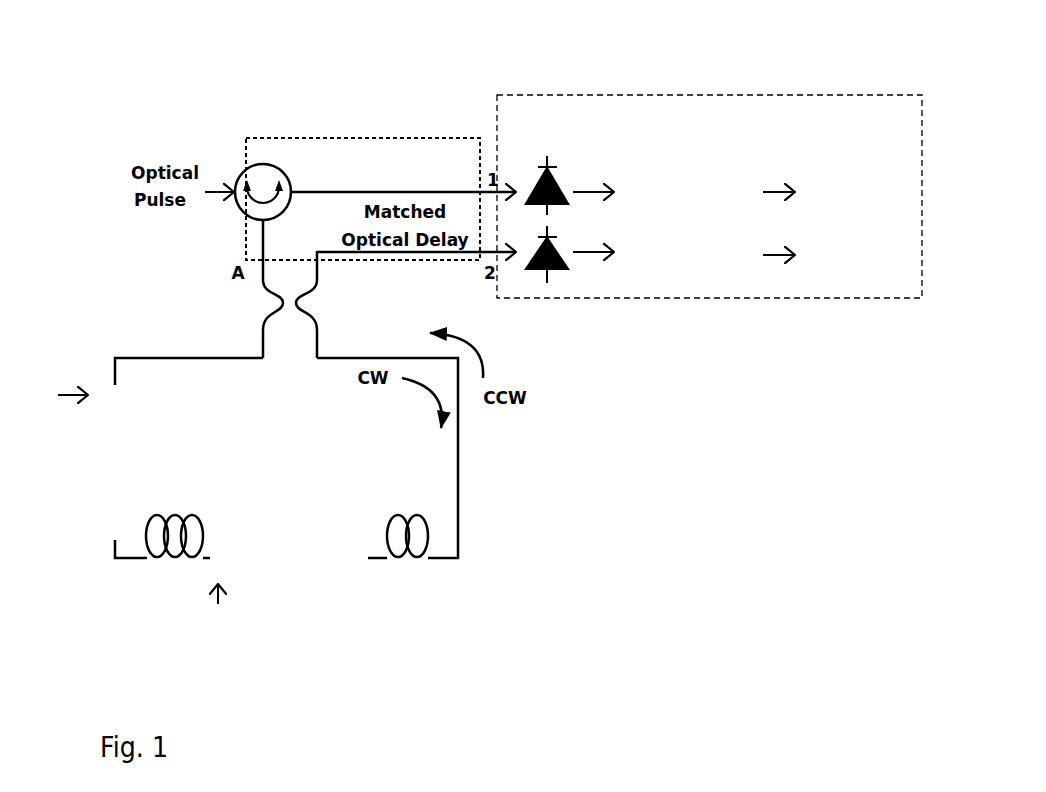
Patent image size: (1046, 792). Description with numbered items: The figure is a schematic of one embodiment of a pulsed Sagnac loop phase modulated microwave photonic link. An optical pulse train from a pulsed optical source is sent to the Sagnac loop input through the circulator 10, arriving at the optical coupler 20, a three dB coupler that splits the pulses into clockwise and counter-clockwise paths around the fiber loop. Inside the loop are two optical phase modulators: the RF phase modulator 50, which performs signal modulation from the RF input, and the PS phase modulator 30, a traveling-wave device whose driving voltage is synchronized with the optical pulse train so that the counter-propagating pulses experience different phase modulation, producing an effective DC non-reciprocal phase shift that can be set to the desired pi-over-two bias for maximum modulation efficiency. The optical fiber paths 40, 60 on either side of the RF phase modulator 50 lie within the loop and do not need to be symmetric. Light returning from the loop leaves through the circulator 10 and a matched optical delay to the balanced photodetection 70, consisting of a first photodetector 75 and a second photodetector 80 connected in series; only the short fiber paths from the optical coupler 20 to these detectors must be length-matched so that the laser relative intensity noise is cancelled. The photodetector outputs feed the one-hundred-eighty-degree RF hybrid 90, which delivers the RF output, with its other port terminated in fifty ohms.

The circulator 10 is at (237, 160).
The optical coupler 20 is at (272, 300).
The PS phase modulator 30 is at (85, 447).
The optical fiber path 40 is at (148, 568).
The RF phase modulator 50 is at (327, 590).
The optical fiber path 60 is at (423, 565).
The balanced photodetection 70 is at (648, 305).
The first photodetector 75 is at (560, 160).
The second photodetector 80 is at (555, 288).
The 180-degree RF hybrid 90 is at (695, 178).